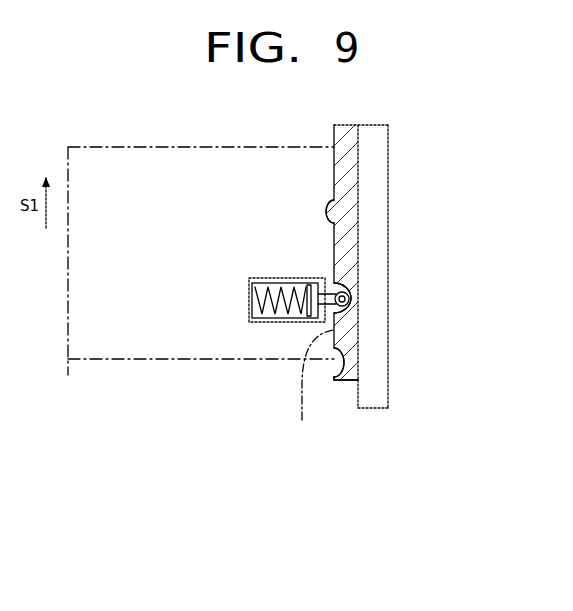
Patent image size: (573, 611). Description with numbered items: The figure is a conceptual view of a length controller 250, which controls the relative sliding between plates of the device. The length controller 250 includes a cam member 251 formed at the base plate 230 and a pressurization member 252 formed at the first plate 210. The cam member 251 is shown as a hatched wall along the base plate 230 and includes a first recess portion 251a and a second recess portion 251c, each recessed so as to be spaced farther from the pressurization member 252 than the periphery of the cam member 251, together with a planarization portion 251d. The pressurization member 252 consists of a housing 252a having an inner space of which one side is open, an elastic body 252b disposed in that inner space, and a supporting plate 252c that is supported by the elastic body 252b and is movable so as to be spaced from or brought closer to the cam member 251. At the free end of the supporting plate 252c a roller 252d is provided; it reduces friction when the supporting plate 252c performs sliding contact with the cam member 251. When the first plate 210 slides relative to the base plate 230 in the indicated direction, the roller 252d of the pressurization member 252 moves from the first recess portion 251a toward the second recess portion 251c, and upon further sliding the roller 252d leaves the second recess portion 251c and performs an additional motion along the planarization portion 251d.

The first plate 210 is at (118, 360).
The base plate 230 is at (388, 143).
The length controller 250 is at (160, 472).
The cam member 251 is at (333, 140).
The first recess portion 251a is at (340, 383).
The second recess portion 251c is at (342, 276).
The planarization portion 251d is at (343, 192).
The pressurization member 252 is at (350, 299).
The housing 252a is at (249, 322).
The elastic body 252b is at (293, 320).
The supporting plate 252c is at (315, 320).
The roller 252d is at (333, 308).